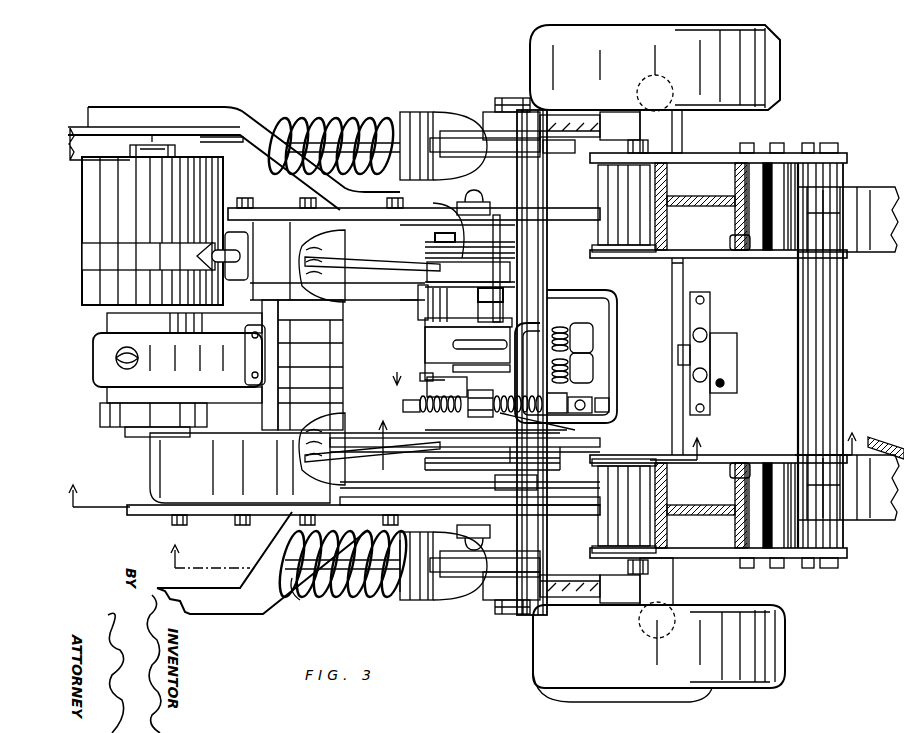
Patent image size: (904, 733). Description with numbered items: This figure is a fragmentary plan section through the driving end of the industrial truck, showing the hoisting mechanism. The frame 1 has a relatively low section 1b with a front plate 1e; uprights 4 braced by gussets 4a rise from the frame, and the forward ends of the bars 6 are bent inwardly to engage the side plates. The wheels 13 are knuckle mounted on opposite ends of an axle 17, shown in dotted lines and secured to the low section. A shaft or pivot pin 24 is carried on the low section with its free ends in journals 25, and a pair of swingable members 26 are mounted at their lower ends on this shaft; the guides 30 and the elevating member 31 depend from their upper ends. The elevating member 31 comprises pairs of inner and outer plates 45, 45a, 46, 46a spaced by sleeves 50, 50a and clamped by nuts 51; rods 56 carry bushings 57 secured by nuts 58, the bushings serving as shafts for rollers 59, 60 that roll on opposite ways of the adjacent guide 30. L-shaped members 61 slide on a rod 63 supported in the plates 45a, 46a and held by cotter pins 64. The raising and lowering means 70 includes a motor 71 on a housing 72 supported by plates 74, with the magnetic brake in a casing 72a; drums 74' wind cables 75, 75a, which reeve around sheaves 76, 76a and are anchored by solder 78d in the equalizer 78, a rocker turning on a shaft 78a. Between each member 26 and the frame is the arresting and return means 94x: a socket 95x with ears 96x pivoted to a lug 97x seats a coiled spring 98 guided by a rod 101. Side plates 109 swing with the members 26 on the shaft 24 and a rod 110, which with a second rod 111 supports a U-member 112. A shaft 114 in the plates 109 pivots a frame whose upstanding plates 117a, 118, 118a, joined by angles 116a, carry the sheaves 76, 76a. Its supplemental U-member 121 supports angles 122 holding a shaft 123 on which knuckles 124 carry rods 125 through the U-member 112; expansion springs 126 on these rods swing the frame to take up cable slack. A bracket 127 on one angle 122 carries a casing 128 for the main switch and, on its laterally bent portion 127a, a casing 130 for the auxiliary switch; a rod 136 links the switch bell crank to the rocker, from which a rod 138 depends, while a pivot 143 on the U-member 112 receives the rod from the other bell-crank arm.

The frame 1 is at (208, 549).
The low frame section 1b is at (392, 306).
The front plate 1e is at (683, 294).
The uprights 4 is at (543, 436).
The gussets 4a is at (439, 364).
The bars 6 is at (238, 110).
The wheels 13 is at (775, 80).
The axle 17 is at (674, 592).
The shaft or pivot pin 24 is at (515, 96).
The journals 25 is at (478, 190).
The swingable members 26 is at (560, 128).
The guides 30 is at (705, 196).
The elevating member 31 is at (848, 203).
The inner plate 45 is at (716, 250).
The outer plate 45a is at (712, 153).
The inner plate 46 is at (714, 462).
The outer plate 46a is at (728, 558).
The sleeves 50 is at (805, 272).
The sleeves 50a is at (777, 143).
The nuts 51 is at (748, 142).
The rods 56 is at (630, 118).
The sleeve or bushing 57 is at (592, 548).
The nuts 58 is at (638, 146).
The roller 59 is at (598, 186).
The roller 60 is at (730, 238).
The L-shaped members 61 is at (880, 458).
The rod 63 is at (832, 392).
The cotter pins 64 is at (830, 143).
The raising and lowering means 70 is at (136, 408).
The motor 71 is at (253, 225).
The housing 72 is at (98, 345).
The casing 72a is at (116, 432).
The plates 74 is at (363, 360).
The drums 74' is at (331, 357).
The cable 75 is at (372, 262).
The cable 75a is at (360, 460).
The sheave 76 is at (425, 290).
The sheave 76a is at (425, 442).
The equalizer 78 is at (690, 318).
The shaft 78a is at (688, 350).
The solder or anchoring means 78d is at (692, 378).
The arresting and return means 94x is at (360, 109).
The socket or cup member 95x is at (420, 598).
The ears 96x is at (466, 596).
The lug 97x is at (511, 586).
The coiled spring 98 is at (302, 594).
The rod 101 is at (360, 598).
The side plates 109 is at (445, 503).
The rod 110 is at (488, 362).
The second rod 111 is at (560, 153).
The U-member 112 is at (425, 332).
The shaft 114 is at (435, 238).
The angles 116a is at (482, 376).
The upstanding plate 117a is at (425, 466).
The upstanding plate 118 is at (418, 300).
The upstanding plate 118a is at (446, 218).
The supplemental U-member 121 is at (612, 306).
The angles 122 is at (592, 402).
The shaft 123 is at (593, 326).
The knuckles 124 is at (593, 362).
The rods 125 is at (470, 350).
The expansion spring 126 is at (566, 326).
The bracket 127 is at (425, 360).
The laterally bent portion 127a is at (420, 380).
The casing 128 is at (440, 318).
The casing 130 is at (450, 378).
The rod 136 is at (610, 403).
The rod 138 is at (720, 392).
The pivot or stud-shaft 143 is at (610, 432).